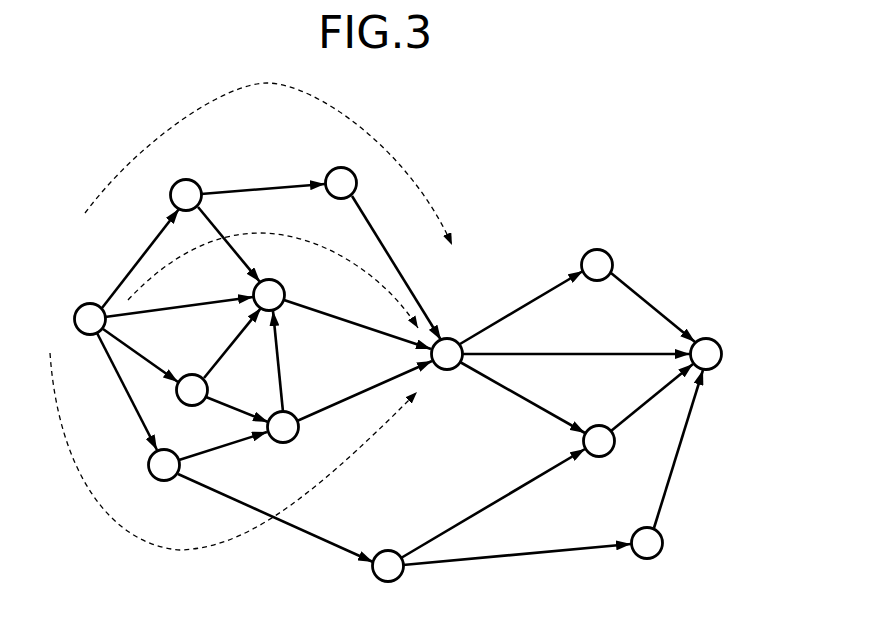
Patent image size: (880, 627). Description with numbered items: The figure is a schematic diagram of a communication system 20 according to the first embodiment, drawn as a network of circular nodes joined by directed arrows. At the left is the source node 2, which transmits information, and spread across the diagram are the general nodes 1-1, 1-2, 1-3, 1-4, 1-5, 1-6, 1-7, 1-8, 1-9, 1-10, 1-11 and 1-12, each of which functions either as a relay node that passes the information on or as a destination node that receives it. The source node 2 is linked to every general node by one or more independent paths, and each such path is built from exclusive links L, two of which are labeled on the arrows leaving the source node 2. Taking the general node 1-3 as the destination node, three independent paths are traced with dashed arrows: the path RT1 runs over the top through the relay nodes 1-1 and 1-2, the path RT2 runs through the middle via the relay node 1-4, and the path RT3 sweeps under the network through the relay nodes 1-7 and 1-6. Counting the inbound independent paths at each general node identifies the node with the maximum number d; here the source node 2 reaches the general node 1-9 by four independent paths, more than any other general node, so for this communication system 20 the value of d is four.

The communication system 20 is at (593, 142).
The source node 2 is at (80, 306).
The general node 1-1 is at (186, 179).
The general node 1-2 is at (341, 167).
The general node 1-3 is at (448, 338).
The general node 1-4 is at (283, 285).
The general node 1-5 is at (191, 406).
The general node 1-6 is at (295, 414).
The general node 1-7 is at (163, 481).
The general node 1-8 is at (597, 249).
The general node 1-9 is at (707, 338).
The general node 1-10 is at (599, 426).
The general node 1-11 is at (388, 551).
The general node 1-12 is at (663, 544).
The exclusive link L is at (137, 260).
The path RT1 is at (392, 155).
The path RT2 is at (283, 219).
The path RT3 is at (352, 462).